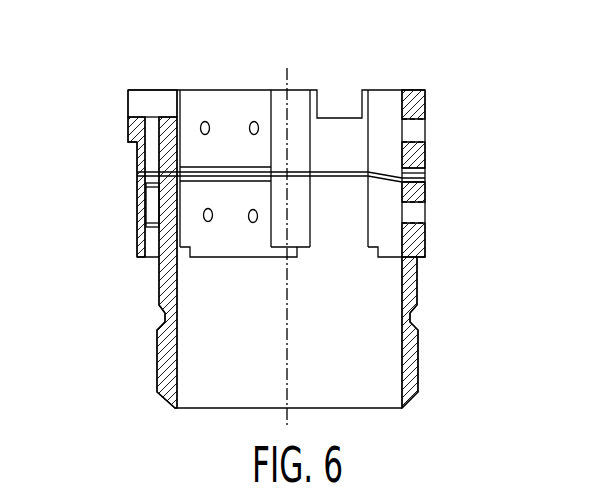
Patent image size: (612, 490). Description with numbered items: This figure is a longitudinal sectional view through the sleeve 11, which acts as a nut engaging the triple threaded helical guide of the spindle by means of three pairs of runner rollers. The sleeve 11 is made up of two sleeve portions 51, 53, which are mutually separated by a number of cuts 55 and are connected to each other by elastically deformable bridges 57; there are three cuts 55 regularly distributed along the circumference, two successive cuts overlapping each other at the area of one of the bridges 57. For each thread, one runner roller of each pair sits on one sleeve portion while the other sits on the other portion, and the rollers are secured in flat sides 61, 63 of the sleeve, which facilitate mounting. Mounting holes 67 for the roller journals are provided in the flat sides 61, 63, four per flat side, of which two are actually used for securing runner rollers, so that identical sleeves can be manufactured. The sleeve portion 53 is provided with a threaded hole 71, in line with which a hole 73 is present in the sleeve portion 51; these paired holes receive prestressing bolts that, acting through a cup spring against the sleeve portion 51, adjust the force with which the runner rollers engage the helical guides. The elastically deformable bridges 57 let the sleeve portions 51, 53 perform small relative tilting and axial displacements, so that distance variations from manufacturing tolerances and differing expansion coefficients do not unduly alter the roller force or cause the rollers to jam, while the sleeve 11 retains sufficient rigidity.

The sleeve 11 is at (126, 250).
The sleeve portion 51 is at (168, 118).
The sleeve portion 53 is at (417, 293).
The cuts 55 is at (243, 181).
The elastically deformable bridges 57 is at (217, 177).
The flat side 61 is at (200, 103).
The flat side 63 is at (420, 157).
The mounting holes 67 is at (247, 120).
The threaded hole 71 is at (153, 207).
The hole 73 is at (150, 155).